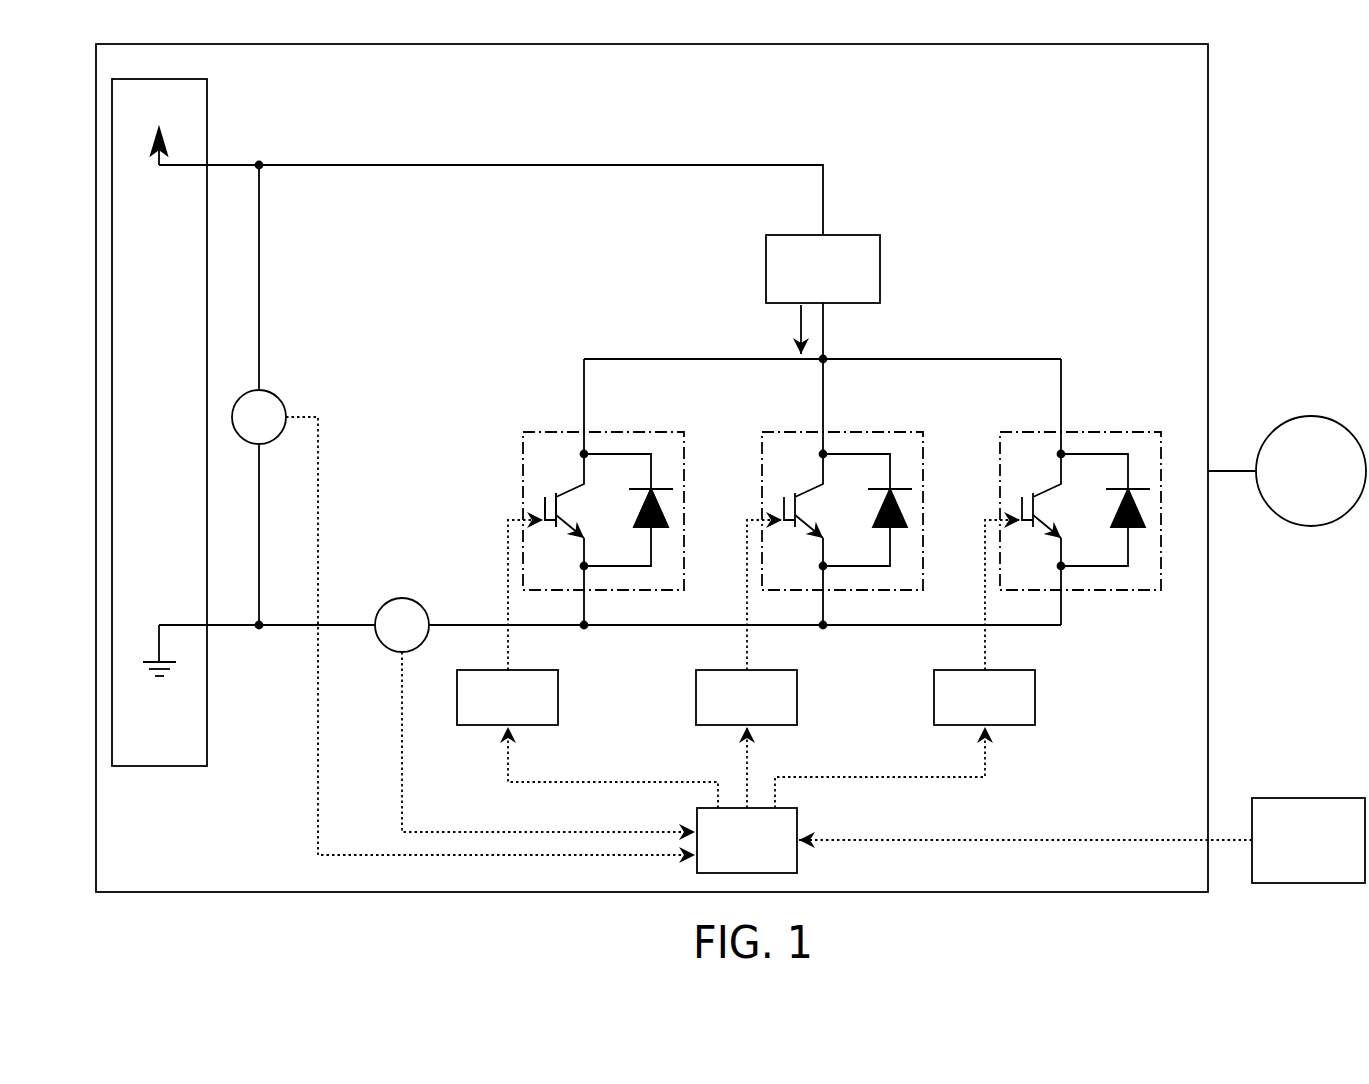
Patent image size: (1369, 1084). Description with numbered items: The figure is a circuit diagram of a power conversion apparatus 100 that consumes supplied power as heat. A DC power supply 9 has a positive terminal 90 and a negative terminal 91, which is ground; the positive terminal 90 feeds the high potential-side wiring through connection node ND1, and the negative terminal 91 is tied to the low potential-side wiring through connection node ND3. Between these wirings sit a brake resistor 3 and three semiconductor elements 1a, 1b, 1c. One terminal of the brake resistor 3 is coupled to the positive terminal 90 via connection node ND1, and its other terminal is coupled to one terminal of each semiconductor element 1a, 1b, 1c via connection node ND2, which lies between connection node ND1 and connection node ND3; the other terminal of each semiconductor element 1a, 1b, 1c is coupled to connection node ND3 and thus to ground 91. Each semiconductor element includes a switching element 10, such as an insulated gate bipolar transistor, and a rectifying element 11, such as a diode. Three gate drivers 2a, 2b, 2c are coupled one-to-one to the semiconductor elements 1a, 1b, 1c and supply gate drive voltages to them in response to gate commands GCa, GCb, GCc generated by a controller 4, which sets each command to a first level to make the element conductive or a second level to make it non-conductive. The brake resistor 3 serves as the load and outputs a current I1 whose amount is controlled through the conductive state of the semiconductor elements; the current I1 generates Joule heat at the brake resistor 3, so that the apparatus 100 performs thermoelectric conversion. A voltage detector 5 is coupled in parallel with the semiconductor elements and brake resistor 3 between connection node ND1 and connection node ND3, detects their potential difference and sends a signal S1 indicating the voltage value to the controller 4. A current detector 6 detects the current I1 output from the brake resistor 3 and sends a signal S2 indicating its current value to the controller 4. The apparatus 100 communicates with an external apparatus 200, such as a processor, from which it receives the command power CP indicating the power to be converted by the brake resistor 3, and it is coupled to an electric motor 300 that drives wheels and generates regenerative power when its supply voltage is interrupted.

The power conversion apparatus 100 is at (1208, 212).
The direct-current power supply 9 is at (207, 120).
The positive terminal 90 is at (147, 133).
The negative terminal 91 is at (162, 697).
The connection node ND1 is at (424, 163).
The connection node ND2 is at (825, 359).
The connection node ND3 is at (456, 622).
The current I1 is at (799, 326).
The brake resistor 3 is at (766, 262).
The voltage detector 5 is at (272, 392).
The current detector 6 is at (396, 596).
The signal S1 is at (316, 836).
The signal S2 is at (400, 754).
The semiconductor element 1a is at (648, 432).
The semiconductor element 1b is at (887, 432).
The semiconductor element 1c is at (1125, 432).
The switching element 10 is at (546, 496).
The rectifying element 11 is at (624, 510).
The gate driver 2a is at (558, 676).
The gate driver 2b is at (797, 676).
The gate driver 2c is at (1035, 676).
The gate command GCa is at (506, 764).
The gate command GCb is at (745, 764).
The gate command GCc is at (982, 757).
The controller 4 is at (797, 826).
The command power CP is at (1154, 840).
The external apparatus 200 is at (1300, 798).
The electric motor 300 is at (1306, 416).